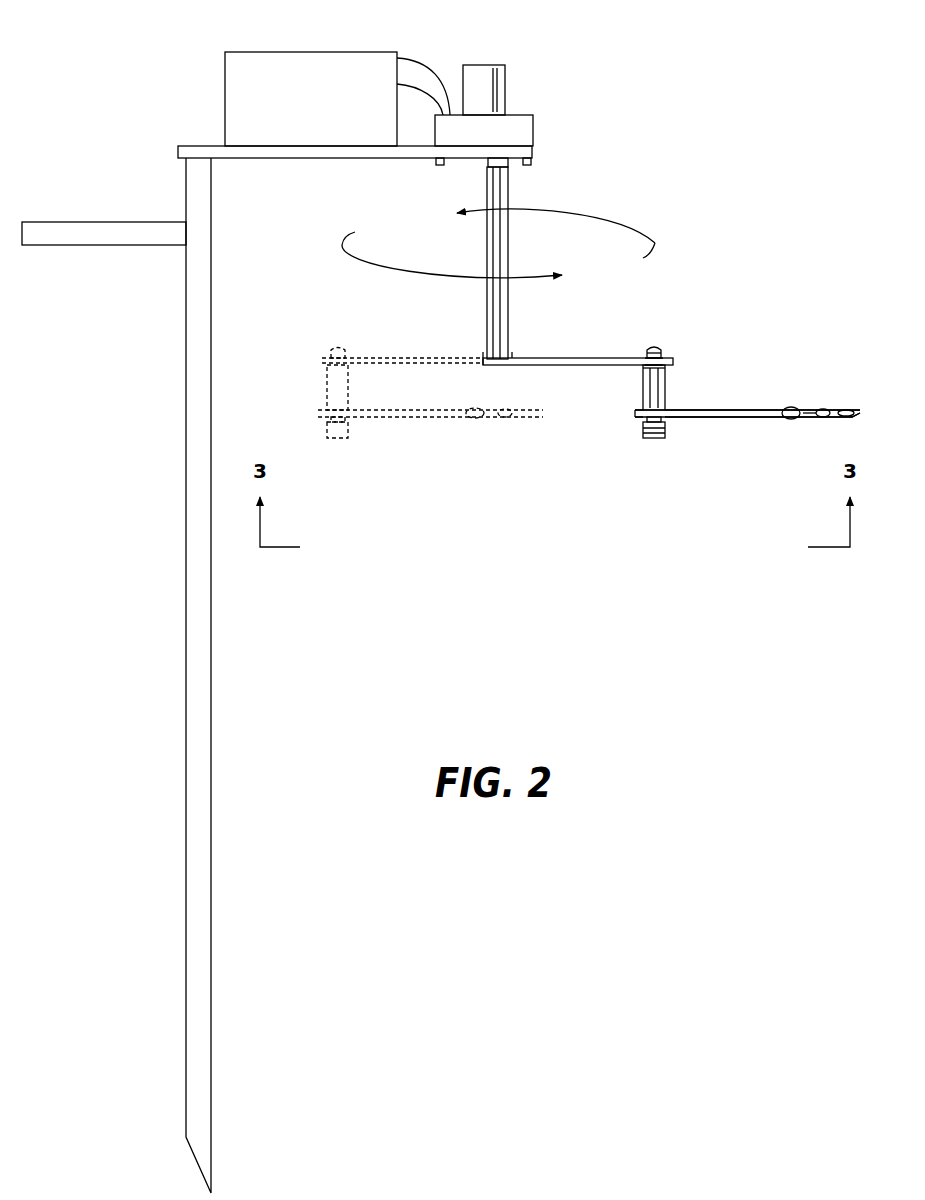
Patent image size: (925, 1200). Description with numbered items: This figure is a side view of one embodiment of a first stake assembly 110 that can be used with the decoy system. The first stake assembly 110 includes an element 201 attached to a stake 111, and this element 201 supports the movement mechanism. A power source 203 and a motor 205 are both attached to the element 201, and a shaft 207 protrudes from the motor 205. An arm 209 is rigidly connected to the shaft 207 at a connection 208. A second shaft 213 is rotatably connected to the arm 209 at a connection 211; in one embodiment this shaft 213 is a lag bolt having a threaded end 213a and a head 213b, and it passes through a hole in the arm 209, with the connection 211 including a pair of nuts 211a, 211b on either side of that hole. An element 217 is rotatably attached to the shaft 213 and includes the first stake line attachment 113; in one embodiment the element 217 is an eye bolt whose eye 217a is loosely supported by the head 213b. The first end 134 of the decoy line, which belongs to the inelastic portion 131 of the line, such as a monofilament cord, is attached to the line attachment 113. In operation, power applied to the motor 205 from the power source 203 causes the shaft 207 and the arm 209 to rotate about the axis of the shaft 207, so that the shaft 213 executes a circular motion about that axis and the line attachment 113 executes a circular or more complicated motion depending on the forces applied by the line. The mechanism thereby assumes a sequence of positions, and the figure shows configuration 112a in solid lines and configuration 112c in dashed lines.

The first stake assembly 110 is at (120, 68).
The stake 111 is at (186, 460).
The configuration of movement mechanism 112a is at (705, 248).
The configuration of movement mechanism 112c is at (350, 322).
The first stake line attachment 113 is at (786, 420).
The inelastic portion 131 is at (860, 410).
The first end 134 is at (828, 419).
The element 201 is at (304, 160).
The power source 203 is at (327, 52).
The motor 205 is at (518, 115).
The shaft 207 is at (508, 205).
The connection 208 is at (483, 358).
The arm 209 is at (530, 366).
The connection 211 is at (678, 358).
The nut 211a is at (645, 356).
The nut 211b is at (643, 370).
The shaft 213 is at (665, 395).
The threaded end 213a is at (658, 347).
The head 213b is at (655, 440).
The element 217 is at (710, 410).
The eye 217a is at (640, 416).